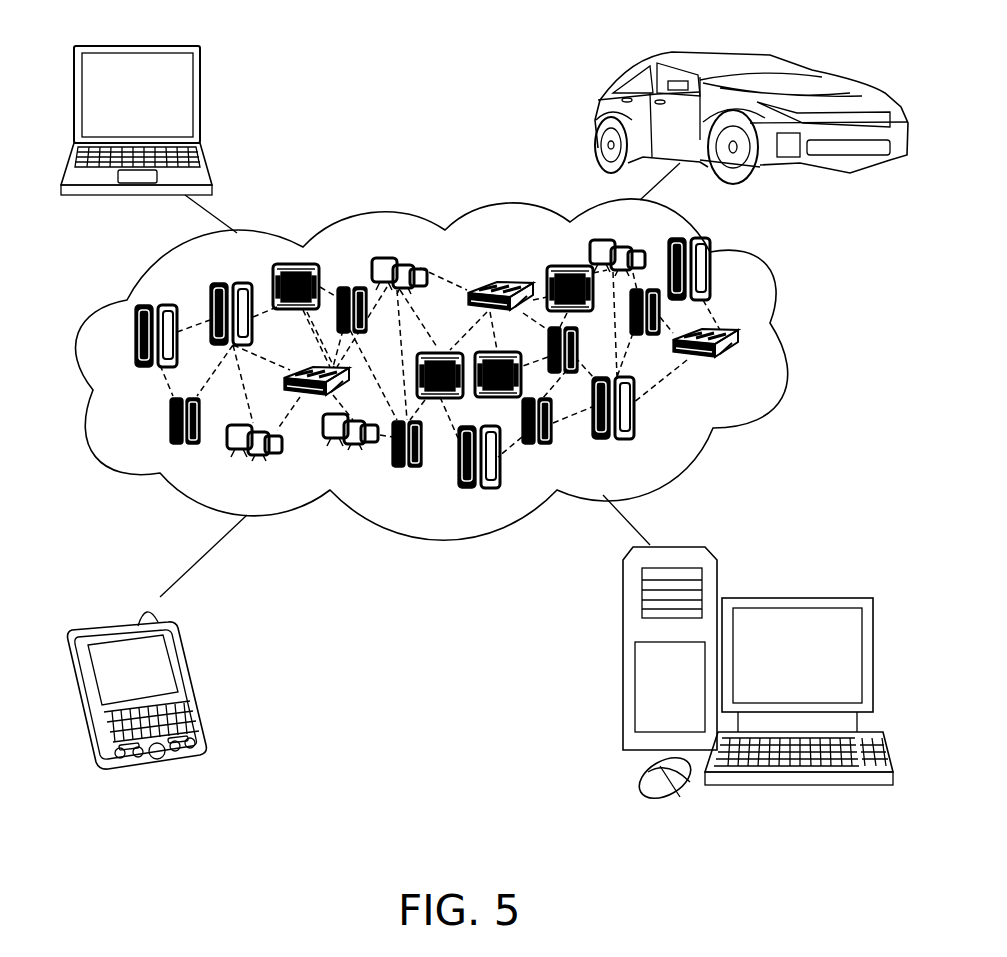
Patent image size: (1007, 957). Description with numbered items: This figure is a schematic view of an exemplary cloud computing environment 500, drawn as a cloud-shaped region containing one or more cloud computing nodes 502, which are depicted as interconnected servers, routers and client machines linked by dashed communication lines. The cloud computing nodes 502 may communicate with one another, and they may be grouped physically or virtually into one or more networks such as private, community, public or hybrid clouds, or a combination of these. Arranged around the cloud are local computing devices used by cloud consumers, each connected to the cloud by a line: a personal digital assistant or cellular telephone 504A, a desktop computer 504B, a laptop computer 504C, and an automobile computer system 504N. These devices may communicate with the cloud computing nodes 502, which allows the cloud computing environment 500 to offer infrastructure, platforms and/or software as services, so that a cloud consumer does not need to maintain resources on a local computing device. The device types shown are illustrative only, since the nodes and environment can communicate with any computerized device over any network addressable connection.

The cloud computing environment 500 is at (750, 340).
The cloud computing nodes 502 is at (742, 368).
The personal digital assistant or cellular telephone 504A is at (178, 652).
The desktop computer 504B is at (785, 598).
The laptop computer 504C is at (200, 78).
The automobile computer system 504N is at (600, 118).